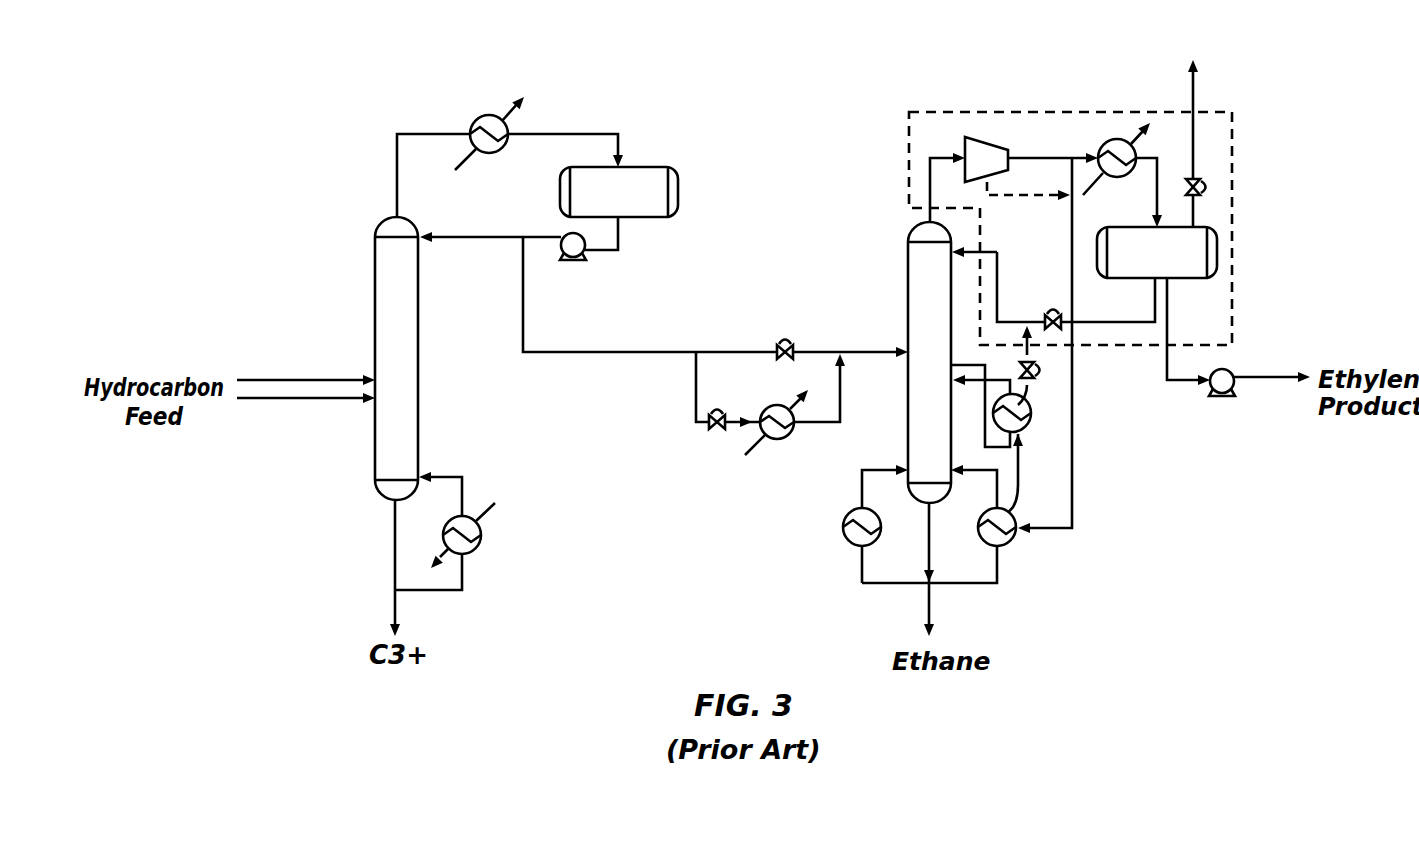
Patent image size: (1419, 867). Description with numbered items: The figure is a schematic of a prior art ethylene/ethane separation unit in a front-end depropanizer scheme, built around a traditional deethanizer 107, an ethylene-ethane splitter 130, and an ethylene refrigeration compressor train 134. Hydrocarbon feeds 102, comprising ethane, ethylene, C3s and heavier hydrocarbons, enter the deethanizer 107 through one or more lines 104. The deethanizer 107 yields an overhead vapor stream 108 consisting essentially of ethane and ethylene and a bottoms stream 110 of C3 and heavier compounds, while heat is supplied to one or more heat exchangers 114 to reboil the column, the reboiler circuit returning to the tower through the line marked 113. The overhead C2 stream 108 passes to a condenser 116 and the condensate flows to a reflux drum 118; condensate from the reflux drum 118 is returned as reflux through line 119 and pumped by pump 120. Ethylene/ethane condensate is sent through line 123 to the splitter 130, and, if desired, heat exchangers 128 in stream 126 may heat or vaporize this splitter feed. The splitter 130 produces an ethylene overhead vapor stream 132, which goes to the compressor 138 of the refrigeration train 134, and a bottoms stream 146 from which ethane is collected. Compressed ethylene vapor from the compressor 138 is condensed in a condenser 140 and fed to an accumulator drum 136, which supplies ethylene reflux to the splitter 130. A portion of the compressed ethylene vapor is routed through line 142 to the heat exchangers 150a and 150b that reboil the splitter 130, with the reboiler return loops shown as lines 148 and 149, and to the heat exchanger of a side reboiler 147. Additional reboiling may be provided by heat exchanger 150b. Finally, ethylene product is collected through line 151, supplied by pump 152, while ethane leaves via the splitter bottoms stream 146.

The hydrocarbon feeds 102 is at (326, 376).
The lines 104 is at (326, 402).
The deethanizer 107 is at (375, 290).
The overhead vapor stream 108 is at (397, 178).
The bottoms stream 110 is at (395, 552).
The reboiler return line 113 is at (440, 592).
The heat exchangers 114 is at (470, 557).
The condenser 116 is at (481, 115).
The reflux drum 118 is at (645, 167).
The line 119 is at (624, 222).
The pump 120 is at (571, 262).
The line 123 is at (592, 355).
The stream 126 is at (694, 392).
The heat exchangers 128 is at (770, 448).
The ethylene-ethane splitter 130 is at (908, 292).
The ethylene overhead vapor stream 132 is at (928, 192).
The ethylene refrigeration compressor train 134 is at (1235, 146).
The accumulator drum 136 is at (1157, 169).
The compressor 138 is at (986, 136).
The condenser 140 is at (1117, 139).
The line 142 is at (1073, 486).
The bottoms stream 146 is at (926, 606).
The side reboiler 147 is at (1032, 426).
The reboiler return line 148 is at (965, 586).
The reboiler return line 149 is at (862, 576).
The heat exchanger 150a is at (1018, 545).
The heat exchanger 150b is at (844, 532).
The line 151 is at (1211, 393).
The pump 152 is at (1167, 372).